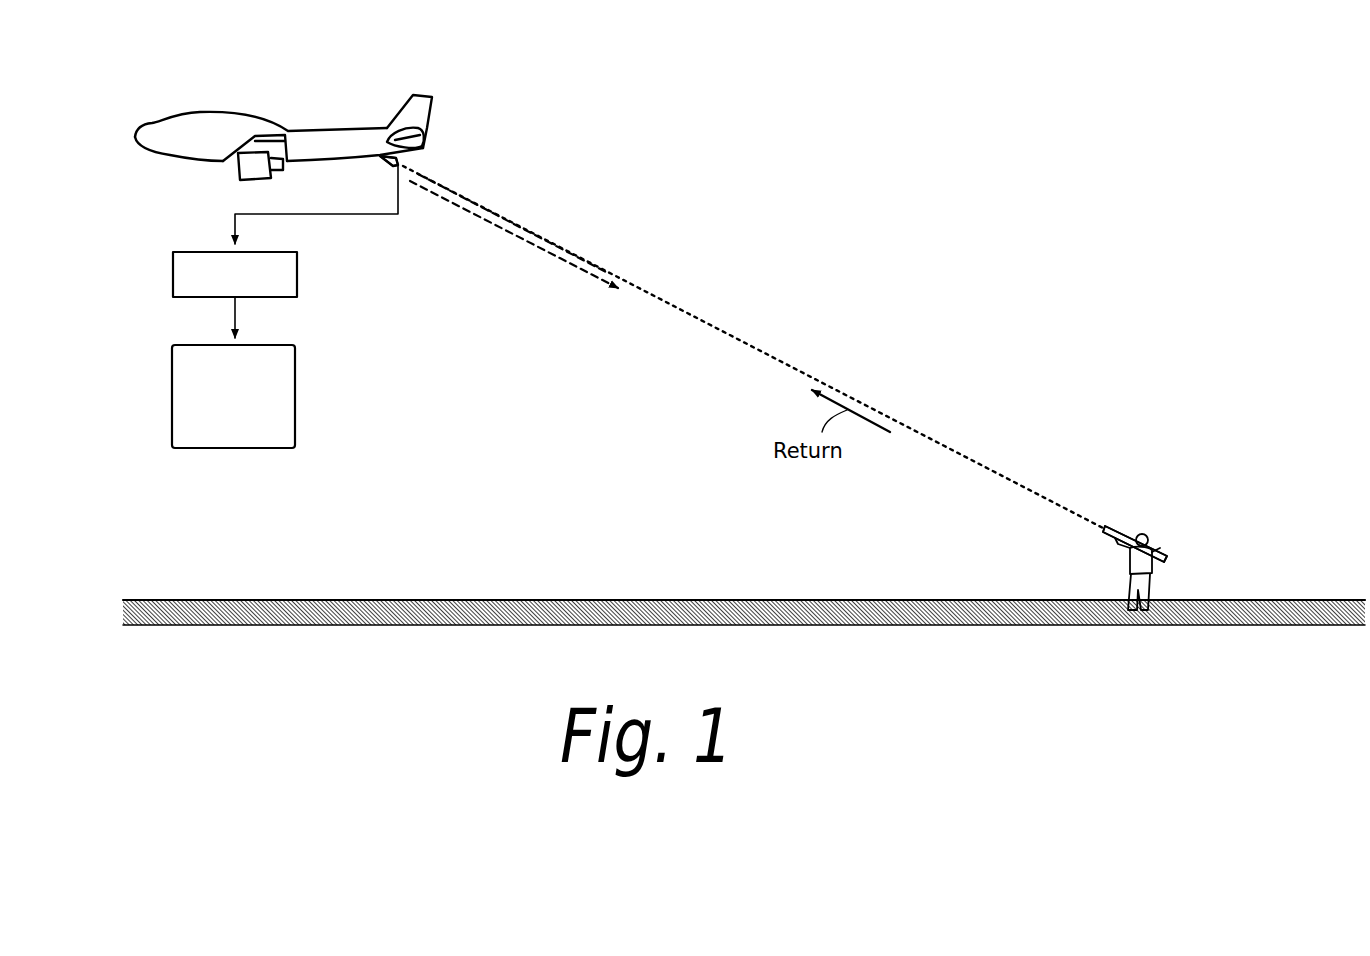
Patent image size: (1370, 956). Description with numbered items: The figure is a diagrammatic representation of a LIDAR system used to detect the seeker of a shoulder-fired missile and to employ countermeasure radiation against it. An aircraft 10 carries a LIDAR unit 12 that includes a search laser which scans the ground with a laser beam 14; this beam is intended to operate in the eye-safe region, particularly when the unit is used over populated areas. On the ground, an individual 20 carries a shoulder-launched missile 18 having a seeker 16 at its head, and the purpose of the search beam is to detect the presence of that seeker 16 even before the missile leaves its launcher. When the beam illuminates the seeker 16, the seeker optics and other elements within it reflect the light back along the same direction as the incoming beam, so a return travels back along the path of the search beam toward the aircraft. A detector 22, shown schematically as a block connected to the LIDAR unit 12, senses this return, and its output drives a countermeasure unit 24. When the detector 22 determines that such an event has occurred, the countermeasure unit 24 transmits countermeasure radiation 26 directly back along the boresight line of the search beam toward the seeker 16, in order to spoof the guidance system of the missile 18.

The aircraft 10 is at (378, 72).
The LIDAR unit 12 is at (417, 158).
The laser beam 14 is at (720, 332).
The seeker 16 is at (1108, 528).
The shoulder-launched missile 18 is at (1160, 542).
The individual 20 is at (1128, 578).
The detector 22 is at (297, 268).
The countermeasure unit 24 is at (295, 395).
The countermeasure radiation 26 is at (517, 238).